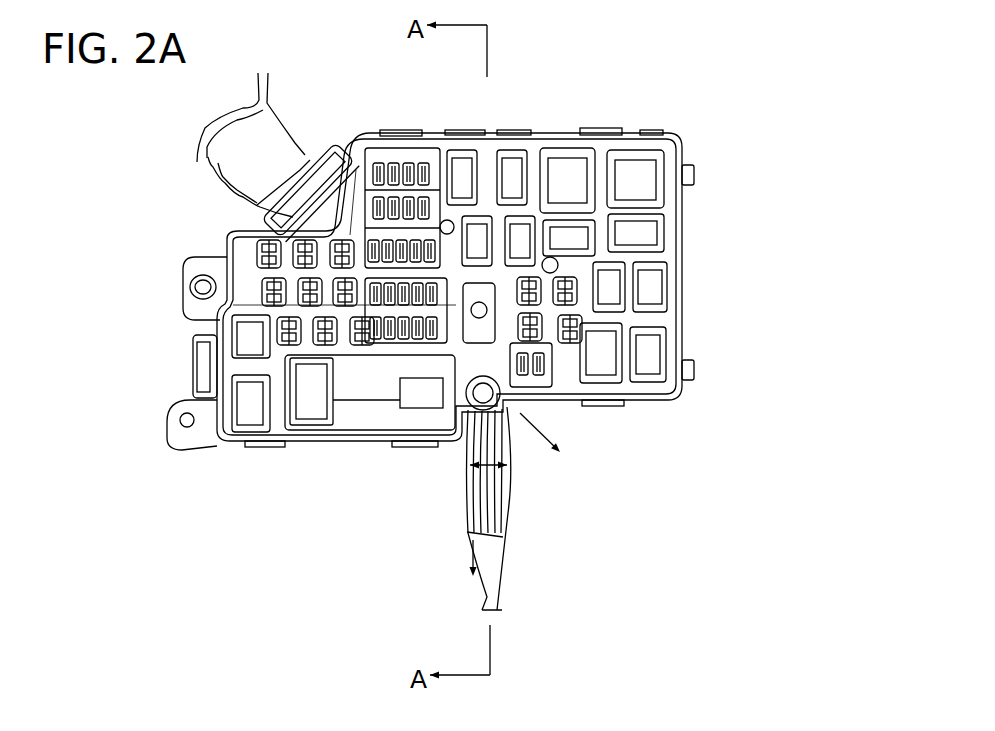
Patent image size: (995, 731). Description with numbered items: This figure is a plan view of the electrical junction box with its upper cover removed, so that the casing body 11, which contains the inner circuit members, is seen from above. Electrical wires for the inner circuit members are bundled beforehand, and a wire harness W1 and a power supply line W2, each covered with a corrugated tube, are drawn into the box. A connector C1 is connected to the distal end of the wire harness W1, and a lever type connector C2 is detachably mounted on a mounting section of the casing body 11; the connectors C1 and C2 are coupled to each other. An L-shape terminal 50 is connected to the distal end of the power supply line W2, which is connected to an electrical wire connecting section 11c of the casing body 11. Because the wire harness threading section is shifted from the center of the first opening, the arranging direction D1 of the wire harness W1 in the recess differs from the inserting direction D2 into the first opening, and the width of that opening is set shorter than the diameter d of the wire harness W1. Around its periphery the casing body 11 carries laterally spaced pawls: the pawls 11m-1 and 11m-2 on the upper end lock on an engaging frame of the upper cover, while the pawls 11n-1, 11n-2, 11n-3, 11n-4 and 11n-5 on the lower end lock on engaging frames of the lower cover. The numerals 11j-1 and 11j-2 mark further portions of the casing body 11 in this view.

The casing body 11 is at (193, 218).
The electrical wire connecting section 11c is at (507, 133).
The first fuse mounting portion 11j-1 is at (345, 352).
The second fuse mounting portion 11j-2 is at (577, 323).
The pawl 11m-1 is at (690, 172).
The pawl 11m-2 is at (688, 376).
The pawl 11n-1 is at (410, 132).
The pawl 11n-2 is at (603, 130).
The pawl 11n-3 is at (205, 370).
The pawl 11n-4 is at (408, 449).
The pawl 11n-5 is at (253, 455).
The L-shape terminal 50 is at (565, 290).
The connector C1 is at (357, 410).
The lever type connector C2 is at (300, 420).
The diameter of the wire harness d is at (470, 465).
The arranging direction D1 is at (462, 558).
The inserting direction D2 is at (545, 431).
The wire harness W1 is at (500, 477).
The power supply line W2 is at (515, 547).